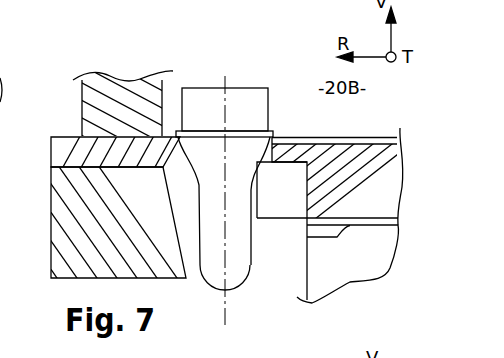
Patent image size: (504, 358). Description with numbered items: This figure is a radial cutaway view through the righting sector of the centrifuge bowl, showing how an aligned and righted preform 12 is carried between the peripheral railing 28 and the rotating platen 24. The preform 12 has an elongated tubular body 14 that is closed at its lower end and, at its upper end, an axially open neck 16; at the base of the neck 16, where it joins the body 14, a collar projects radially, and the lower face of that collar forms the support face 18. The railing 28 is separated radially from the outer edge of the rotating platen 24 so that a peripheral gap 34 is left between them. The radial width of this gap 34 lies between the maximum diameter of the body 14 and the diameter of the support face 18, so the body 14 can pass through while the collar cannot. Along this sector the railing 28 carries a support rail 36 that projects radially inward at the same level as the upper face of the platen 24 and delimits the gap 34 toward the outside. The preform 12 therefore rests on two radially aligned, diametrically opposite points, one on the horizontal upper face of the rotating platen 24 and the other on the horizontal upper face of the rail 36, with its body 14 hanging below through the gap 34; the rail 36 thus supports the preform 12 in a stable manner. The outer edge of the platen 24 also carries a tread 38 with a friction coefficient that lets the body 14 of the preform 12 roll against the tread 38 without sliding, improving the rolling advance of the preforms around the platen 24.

The preform 12 is at (258, 269).
The body 14 is at (213, 250).
The neck 16 is at (240, 103).
The support face 18 is at (215, 131).
The rotating platen 24 is at (362, 175).
The railing 28 is at (110, 100).
The peripheral gap 34 is at (268, 160).
The support rail 36 is at (72, 147).
The tread 38 is at (280, 185).